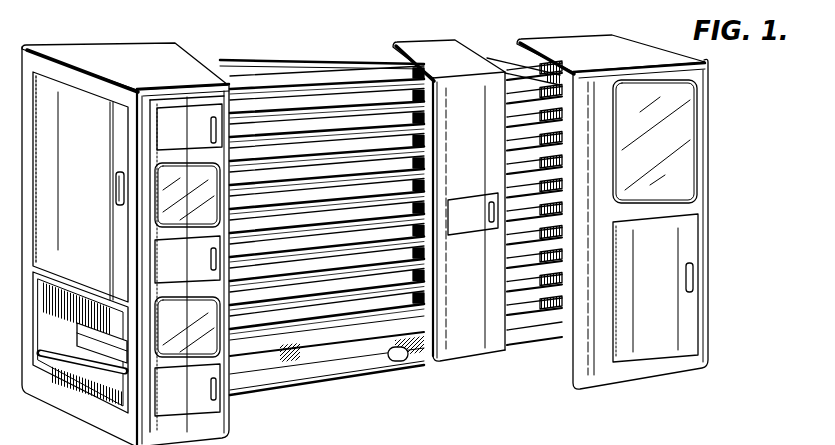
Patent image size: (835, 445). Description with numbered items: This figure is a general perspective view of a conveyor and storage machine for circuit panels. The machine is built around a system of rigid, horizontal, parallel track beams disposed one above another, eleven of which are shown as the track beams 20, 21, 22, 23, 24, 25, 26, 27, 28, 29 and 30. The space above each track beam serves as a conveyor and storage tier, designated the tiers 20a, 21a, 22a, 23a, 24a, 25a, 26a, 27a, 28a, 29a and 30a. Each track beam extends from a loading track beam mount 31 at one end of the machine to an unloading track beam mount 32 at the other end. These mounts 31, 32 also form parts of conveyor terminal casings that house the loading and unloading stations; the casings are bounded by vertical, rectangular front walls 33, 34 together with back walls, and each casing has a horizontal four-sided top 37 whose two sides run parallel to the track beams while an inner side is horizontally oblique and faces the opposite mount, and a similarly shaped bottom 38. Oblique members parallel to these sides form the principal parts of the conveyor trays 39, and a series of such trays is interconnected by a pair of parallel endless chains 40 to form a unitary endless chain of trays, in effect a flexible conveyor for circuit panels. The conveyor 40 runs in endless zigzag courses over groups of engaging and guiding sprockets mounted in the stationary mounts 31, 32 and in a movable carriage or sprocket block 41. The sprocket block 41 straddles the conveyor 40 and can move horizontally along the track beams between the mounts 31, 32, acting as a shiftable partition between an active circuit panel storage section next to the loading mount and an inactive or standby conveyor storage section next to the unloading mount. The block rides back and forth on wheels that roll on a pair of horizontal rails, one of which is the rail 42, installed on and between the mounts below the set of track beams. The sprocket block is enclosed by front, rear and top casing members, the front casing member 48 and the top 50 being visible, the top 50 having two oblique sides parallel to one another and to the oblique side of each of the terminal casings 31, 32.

The track beam 20 is at (269, 83).
The track beam 21 is at (276, 103).
The track beam 22 is at (287, 127).
The track beam 23 is at (259, 154).
The track beam 24 is at (276, 179).
The track beam 25 is at (261, 209).
The track beam 26 is at (279, 234).
The track beam 27 is at (261, 259).
The track beam 28 is at (282, 282).
The track beam 29 is at (262, 309).
The track beam 30 is at (276, 334).
The conveyor and storage tier 20a is at (393, 83).
The conveyor and storage tier 21a is at (393, 102).
The conveyor and storage tier 22a is at (395, 127).
The conveyor and storage tier 23a is at (383, 151).
The conveyor and storage tier 24a is at (386, 176).
The conveyor and storage tier 25a is at (386, 201).
The conveyor and storage tier 26a is at (386, 224).
The conveyor and storage tier 27a is at (386, 249).
The conveyor and storage tier 28a is at (391, 274).
The conveyor and storage tier 29a is at (393, 297).
The conveyor and storage tier 30a is at (393, 321).
The loading track beam mount 31 is at (146, 227).
The unloading track beam mount 32 is at (612, 216).
The front wall 33 is at (226, 436).
The front wall 34 is at (598, 372).
The top 37 is at (120, 55).
The bottom 38 is at (547, 48).
The conveyor tray 39 is at (107, 333).
The endless chains 40 is at (305, 302).
The sprocket block 41 is at (452, 207).
The horizontal rail 42 is at (266, 396).
The front casing member 48 is at (482, 346).
The top casing member 50 is at (458, 55).